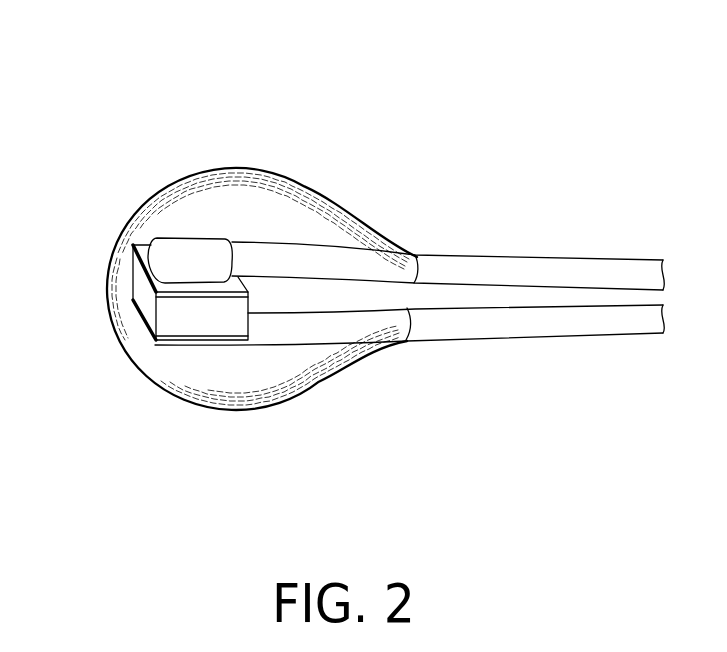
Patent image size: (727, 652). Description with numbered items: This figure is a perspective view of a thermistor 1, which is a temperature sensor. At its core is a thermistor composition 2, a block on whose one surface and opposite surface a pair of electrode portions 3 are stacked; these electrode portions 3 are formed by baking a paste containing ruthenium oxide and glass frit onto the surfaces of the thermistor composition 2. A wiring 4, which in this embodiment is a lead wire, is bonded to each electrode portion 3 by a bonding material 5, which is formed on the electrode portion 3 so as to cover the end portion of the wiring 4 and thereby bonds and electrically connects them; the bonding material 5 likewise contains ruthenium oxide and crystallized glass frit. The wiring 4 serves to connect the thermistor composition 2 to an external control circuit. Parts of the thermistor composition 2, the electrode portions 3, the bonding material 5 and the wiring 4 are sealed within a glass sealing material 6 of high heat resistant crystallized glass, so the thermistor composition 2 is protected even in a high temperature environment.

The thermistor 1 is at (265, 110).
The thermistor composition 2 is at (140, 283).
The electrode portions 3 is at (147, 248).
The wiring 4 is at (510, 263).
The bonding material 5 is at (178, 248).
The glass sealing material 6 is at (302, 197).